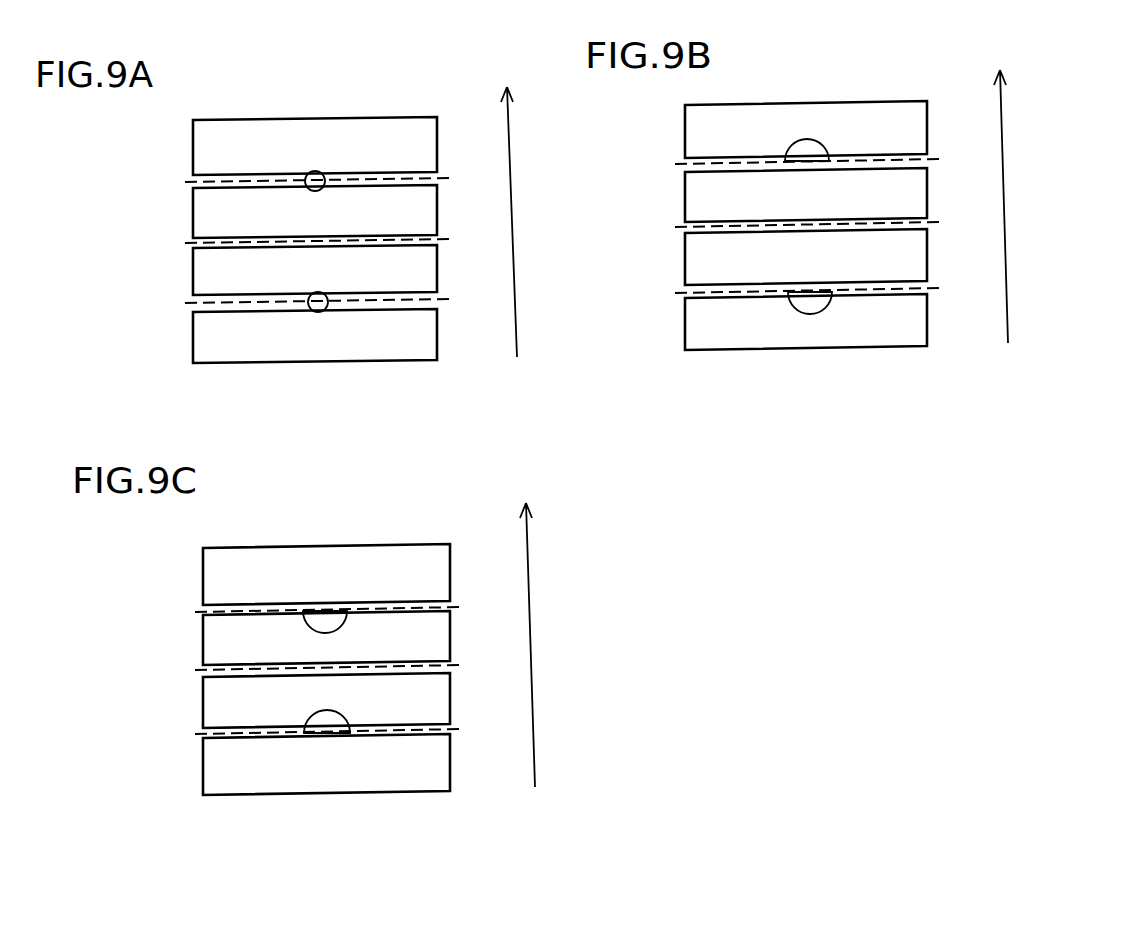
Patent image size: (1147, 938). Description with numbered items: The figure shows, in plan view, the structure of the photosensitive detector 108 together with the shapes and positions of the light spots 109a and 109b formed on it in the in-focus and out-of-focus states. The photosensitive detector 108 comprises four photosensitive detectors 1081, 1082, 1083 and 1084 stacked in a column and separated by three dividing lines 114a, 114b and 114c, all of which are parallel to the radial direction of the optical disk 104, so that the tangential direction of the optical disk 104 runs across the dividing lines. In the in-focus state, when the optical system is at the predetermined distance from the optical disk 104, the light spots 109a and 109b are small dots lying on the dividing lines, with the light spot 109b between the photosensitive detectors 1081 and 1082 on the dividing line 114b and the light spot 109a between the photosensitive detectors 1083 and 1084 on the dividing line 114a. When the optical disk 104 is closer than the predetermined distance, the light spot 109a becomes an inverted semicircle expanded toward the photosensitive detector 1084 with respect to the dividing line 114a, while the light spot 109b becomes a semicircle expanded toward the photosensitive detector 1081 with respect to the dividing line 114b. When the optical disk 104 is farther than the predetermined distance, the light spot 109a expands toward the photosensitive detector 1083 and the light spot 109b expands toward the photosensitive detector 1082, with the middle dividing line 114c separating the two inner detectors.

In FIG. 9A, the photosensitive detector 108 is at (107, 130).
In FIG. 9B, the photosensitive detector 108 is at (617, 110).
In FIG. 9C, the photosensitive detector 108 is at (120, 555).
In FIG. 9A, the photosensitive detector 1081 is at (203, 153).
In FIG. 9B, the photosensitive detector 1081 is at (692, 132).
In FIG. 9C, the photosensitive detector 1081 is at (218, 573).
In FIG. 9A, the photosensitive detector 1082 is at (208, 219).
In FIG. 9B, the photosensitive detector 1082 is at (700, 198).
In FIG. 9C, the photosensitive detector 1082 is at (228, 641).
In FIG. 9A, the photosensitive detector 1083 is at (213, 281).
In FIG. 9B, the photosensitive detector 1083 is at (702, 265).
In FIG. 9C, the photosensitive detector 1083 is at (225, 701).
In FIG. 9A, the photosensitive detector 1084 is at (220, 346).
In FIG. 9B, the photosensitive detector 1084 is at (705, 329).
In FIG. 9C, the photosensitive detector 1084 is at (228, 769).
In FIG. 9A, the dividing line 114a is at (344, 301).
In FIG. 9B, the dividing line 114a is at (835, 288).
In FIG. 9C, the dividing line 114a is at (356, 731).
In FIG. 9A, the dividing line 114b is at (344, 179).
In FIG. 9B, the dividing line 114b is at (835, 160).
In FIG. 9C, the dividing line 114b is at (356, 609).
In FIG. 9A, the dividing line 114c is at (343, 241).
In FIG. 9B, the dividing line 114c is at (834, 223).
In FIG. 9C, the dividing line 114c is at (355, 666).
In FIG. 9A, the light spot 109a is at (320, 312).
In FIG. 9B, the light spot 109a is at (810, 312).
In FIG. 9C, the light spot 109a is at (296, 722).
In FIG. 9A, the light spot 109b is at (316, 171).
In FIG. 9B, the light spot 109b is at (820, 142).
In FIG. 9C, the light spot 109b is at (350, 625).
In FIG. 9A, the optical disk 104 is at (530, 261).
In FIG. 9B, the optical disk 104 is at (1031, 244).
In FIG. 9C, the optical disk 104 is at (542, 683).